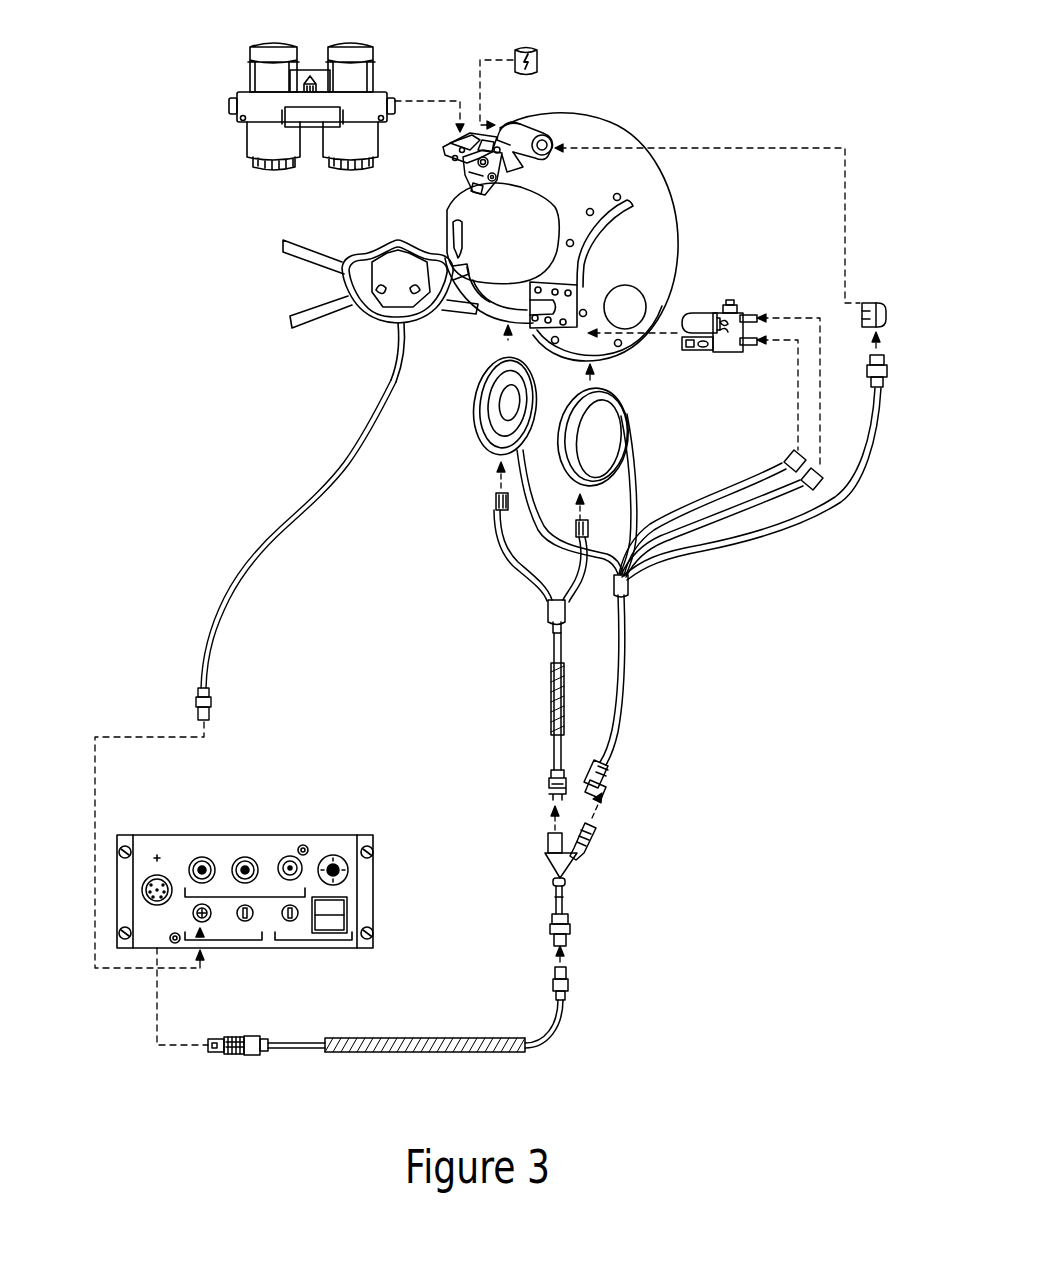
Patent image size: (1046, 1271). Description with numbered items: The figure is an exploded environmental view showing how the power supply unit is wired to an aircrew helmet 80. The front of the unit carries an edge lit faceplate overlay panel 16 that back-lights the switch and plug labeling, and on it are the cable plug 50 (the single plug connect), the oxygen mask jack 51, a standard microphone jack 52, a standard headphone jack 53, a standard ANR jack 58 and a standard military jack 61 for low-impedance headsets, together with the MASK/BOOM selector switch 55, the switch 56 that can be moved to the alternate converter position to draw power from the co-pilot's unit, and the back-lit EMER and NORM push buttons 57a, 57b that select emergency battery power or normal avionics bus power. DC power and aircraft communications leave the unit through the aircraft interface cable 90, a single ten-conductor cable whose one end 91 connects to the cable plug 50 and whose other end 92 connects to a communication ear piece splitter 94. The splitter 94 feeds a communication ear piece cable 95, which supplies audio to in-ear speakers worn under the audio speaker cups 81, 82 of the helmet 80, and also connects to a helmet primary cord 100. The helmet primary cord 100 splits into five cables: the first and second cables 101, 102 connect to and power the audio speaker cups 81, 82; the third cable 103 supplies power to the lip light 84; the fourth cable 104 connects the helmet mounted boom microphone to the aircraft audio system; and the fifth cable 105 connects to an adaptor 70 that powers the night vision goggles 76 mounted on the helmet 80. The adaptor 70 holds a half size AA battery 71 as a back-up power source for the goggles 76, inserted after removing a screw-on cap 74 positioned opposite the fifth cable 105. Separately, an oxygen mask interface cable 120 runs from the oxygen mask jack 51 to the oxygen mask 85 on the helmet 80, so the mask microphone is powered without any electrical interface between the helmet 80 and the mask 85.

The edge lit faceplate overlay panel 16 is at (140, 850).
The cable plug 50 is at (163, 880).
The oxygen mask jack 51 is at (225, 950).
The standard microphone jack 52 is at (205, 862).
The standard headphone jack 53 is at (248, 862).
The MASK/BOOM selector switch 55 is at (258, 938).
The DC-2 switch 56 is at (312, 948).
The EMER push button 57a is at (342, 908).
The NORM push button 57b is at (342, 925).
The standard ANR jack 58 is at (292, 860).
The military U-174/U jack 61 is at (334, 862).
The adaptor 70 is at (527, 134).
The half size AA battery 71 is at (518, 55).
The screw-on cap 74 is at (497, 132).
The night vision goggles 76 is at (272, 103).
The aircrew helmet 80 is at (607, 112).
The audio speaker cup 81 is at (483, 425).
The audio speaker cup 82 is at (598, 398).
The lip light 84 is at (702, 325).
The oxygen mask 85 is at (386, 268).
The aircraft interface cable 90 is at (300, 1050).
The one end of the cable 91 is at (210, 1055).
The other end of the cable 92 is at (567, 973).
The communication ear piece splitter 94 is at (567, 882).
The communication ear piece cable 95 is at (553, 748).
The helmet primary cord 100 is at (622, 694).
The first cable 101 is at (529, 501).
The second cable 102 is at (637, 473).
The third cable 103 is at (722, 488).
The fourth cable 104 is at (722, 512).
The fifth cable 105 is at (856, 472).
The oxygen mask interface cable 120 is at (274, 530).